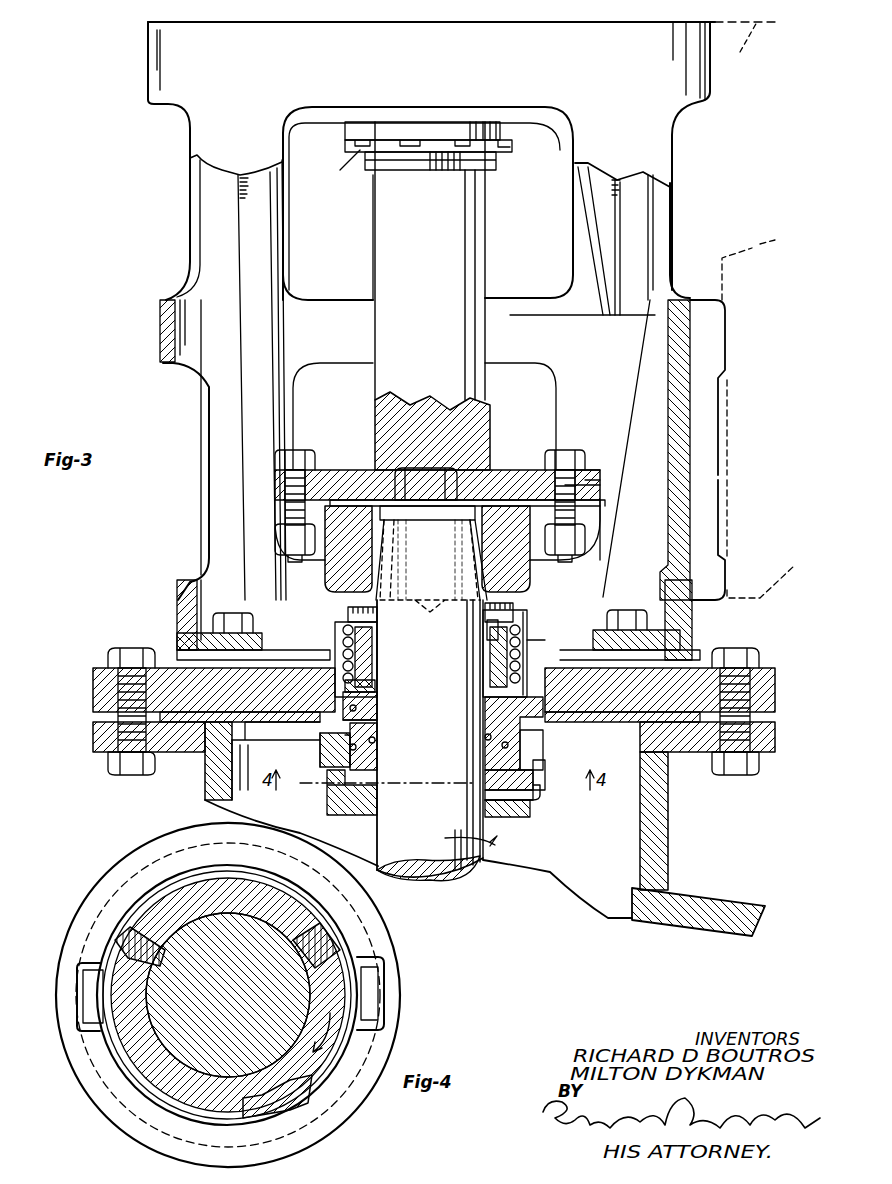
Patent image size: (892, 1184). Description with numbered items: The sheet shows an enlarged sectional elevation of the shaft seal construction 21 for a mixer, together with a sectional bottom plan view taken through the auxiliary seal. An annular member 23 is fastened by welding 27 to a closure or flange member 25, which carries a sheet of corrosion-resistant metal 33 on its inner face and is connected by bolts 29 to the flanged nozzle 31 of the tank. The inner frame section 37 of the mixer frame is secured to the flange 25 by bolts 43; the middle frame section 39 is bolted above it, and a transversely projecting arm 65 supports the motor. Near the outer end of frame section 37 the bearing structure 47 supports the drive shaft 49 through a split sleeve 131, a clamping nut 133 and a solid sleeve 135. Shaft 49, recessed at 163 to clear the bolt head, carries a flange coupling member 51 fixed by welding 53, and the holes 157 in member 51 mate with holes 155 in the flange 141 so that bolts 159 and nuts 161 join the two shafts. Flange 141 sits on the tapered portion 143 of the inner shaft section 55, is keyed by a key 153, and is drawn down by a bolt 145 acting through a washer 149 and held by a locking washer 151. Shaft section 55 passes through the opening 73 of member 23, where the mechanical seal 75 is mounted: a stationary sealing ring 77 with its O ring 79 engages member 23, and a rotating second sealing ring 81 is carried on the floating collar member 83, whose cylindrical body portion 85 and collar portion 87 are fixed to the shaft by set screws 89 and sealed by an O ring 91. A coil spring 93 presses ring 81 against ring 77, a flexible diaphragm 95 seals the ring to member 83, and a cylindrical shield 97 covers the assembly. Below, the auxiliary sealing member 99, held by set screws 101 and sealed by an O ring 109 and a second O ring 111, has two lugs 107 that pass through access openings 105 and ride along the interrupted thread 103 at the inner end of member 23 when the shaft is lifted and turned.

In FIG. 3, the shaft seal construction 21 is at (485, 829).
In FIG. 3, the annular member 23 is at (543, 754).
In FIG. 4, the annular member 23 is at (348, 1110).
In FIG. 3, the flange member 25 is at (93, 680).
In FIG. 3, the welding 27 is at (270, 765).
In FIG. 3, the bolts 29 is at (115, 648).
In FIG. 3, the flanged nozzle 31 is at (100, 750).
In FIG. 3, the sheet of corrosion-resistant metal 33 is at (628, 722).
In FIG. 3, the inner frame section 37 is at (200, 545).
In FIG. 3, the middle frame section 39 is at (744, 49).
In FIG. 3, the bolts 43 is at (235, 612).
In FIG. 3, the bearing structure 47 is at (338, 153).
In FIG. 3, the shaft 49 is at (385, 237).
In FIG. 3, the flange coupling member 51 is at (590, 468).
In FIG. 3, the welding 53 is at (372, 472).
In FIG. 3, the inner shaft section 55 is at (462, 870).
In FIG. 4, the inner shaft section 55 is at (212, 925).
In FIG. 3, the transversely projecting arm 65 is at (750, 262).
In FIG. 3, the opening 73 is at (490, 724).
In FIG. 3, the mechanical seal 75 is at (436, 657).
In FIG. 3, the stationary sealing ring 77 is at (376, 700).
In FIG. 3, the O ring 79 is at (378, 716).
In FIG. 3, the second sealing ring 81 is at (372, 680).
In FIG. 3, the floating seat or collar member 83 is at (386, 644).
In FIG. 3, the cylindrical body portion 85 is at (492, 640).
In FIG. 3, the collar portion 87 is at (348, 614).
In FIG. 3, the set screws 89 is at (377, 612).
In FIG. 3, the O ring 91 is at (487, 628).
In FIG. 3, the coil spring 93 is at (528, 648).
In FIG. 3, the flexible diaphragm or bellows 95 is at (508, 665).
In FIG. 3, the cylindrical cover or shield 97 is at (335, 650).
In FIG. 3, the sealing member 99 is at (508, 817).
In FIG. 4, the sealing member 99 is at (340, 960).
In FIG. 4, the set screws 101 is at (128, 938).
In FIG. 3, the interrupted thread 103 is at (543, 748).
In FIG. 4, the interrupted thread 103 is at (142, 860).
In FIG. 3, the access openings 105 is at (485, 768).
In FIG. 4, the access openings 105 is at (80, 975).
In FIG. 3, the lugs 107 is at (330, 795).
In FIG. 4, the lugs 107 is at (88, 1010).
In FIG. 3, the O ring 109 is at (360, 745).
In FIG. 4, the O ring 109 is at (285, 1105).
In FIG. 3, the second O ring 111 is at (486, 735).
In FIG. 3, the split sleeve 131 is at (405, 172).
In FIG. 3, the clamping nut 133 is at (505, 150).
In FIG. 3, the solid sleeve 135 is at (448, 127).
In FIG. 3, the flange 141 is at (605, 506).
In FIG. 3, the tapered portion 143 is at (505, 560).
In FIG. 3, the bolt 145 is at (428, 490).
In FIG. 3, the washer 149 is at (431, 559).
In FIG. 3, the locking washer 151 is at (470, 500).
In FIG. 3, the key 153 is at (350, 560).
In FIG. 3, the holes 155 is at (600, 498).
In FIG. 3, the holes 157 is at (598, 475).
In FIG. 3, the bolts 159 is at (300, 450).
In FIG. 3, the nuts 161 is at (272, 543).
In FIG. 3, the recess 163 is at (420, 410).